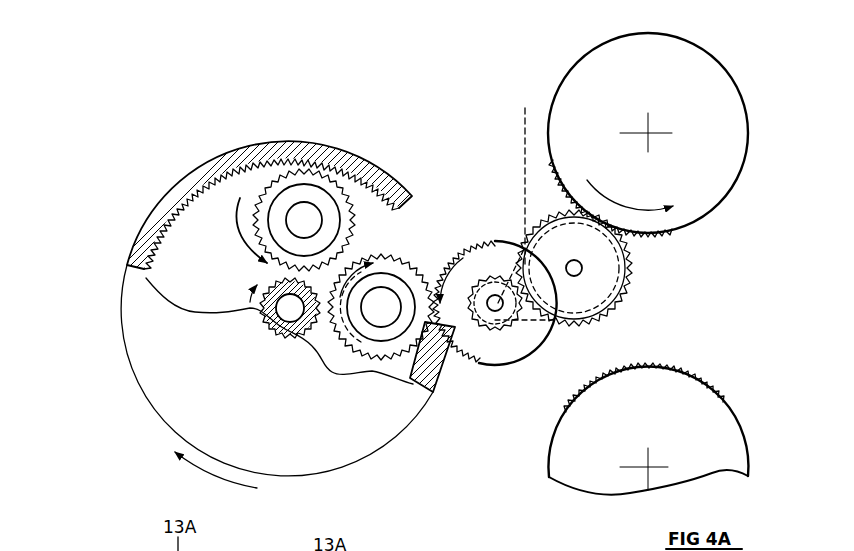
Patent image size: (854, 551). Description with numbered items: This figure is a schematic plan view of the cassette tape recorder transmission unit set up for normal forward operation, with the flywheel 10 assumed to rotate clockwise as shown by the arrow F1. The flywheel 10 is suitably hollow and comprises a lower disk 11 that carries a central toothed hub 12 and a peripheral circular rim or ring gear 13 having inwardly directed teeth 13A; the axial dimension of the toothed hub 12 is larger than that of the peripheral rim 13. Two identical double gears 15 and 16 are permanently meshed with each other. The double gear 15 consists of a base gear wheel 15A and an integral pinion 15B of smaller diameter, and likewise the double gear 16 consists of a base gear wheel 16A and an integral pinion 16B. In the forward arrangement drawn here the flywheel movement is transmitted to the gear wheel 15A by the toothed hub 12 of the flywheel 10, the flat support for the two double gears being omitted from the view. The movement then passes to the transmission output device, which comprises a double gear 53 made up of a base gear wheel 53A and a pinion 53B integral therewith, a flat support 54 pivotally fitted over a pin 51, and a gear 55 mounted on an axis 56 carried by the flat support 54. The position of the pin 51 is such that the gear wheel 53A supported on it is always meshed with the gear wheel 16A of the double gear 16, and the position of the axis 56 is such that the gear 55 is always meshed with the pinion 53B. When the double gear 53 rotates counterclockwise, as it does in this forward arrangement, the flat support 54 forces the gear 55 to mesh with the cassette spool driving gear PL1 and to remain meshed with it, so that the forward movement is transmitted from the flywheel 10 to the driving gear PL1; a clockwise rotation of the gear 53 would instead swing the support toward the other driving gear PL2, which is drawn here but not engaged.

The flywheel 10 is at (110, 297).
The lower disk 11 is at (233, 398).
The central toothed hub 12 is at (267, 315).
The peripheral circular rim 13 is at (226, 148).
The inwardly directed teeth 13A is at (180, 203).
The double gear 15 is at (220, 237).
The base gear wheel 15A is at (255, 215).
The pinion 15B is at (283, 202).
The double gear 16 is at (422, 246).
The base gear wheel 16A is at (342, 330).
The pinion 16B is at (378, 335).
The pin 51 is at (499, 307).
The double gear 53 is at (493, 230).
The base gear wheel 53A is at (468, 340).
The pinion 53B is at (497, 323).
The flat support 54 is at (519, 177).
The gear 55 is at (618, 290).
The axis 56 is at (582, 268).
The driving gear PL1 is at (726, 135).
The driving gear PL2 is at (653, 395).
The arrow F1 is at (232, 476).